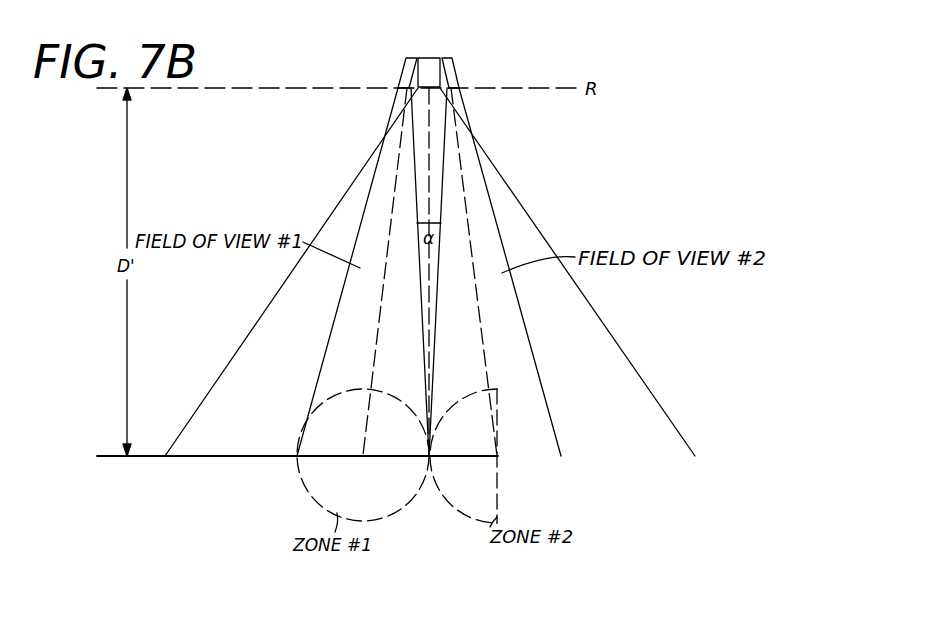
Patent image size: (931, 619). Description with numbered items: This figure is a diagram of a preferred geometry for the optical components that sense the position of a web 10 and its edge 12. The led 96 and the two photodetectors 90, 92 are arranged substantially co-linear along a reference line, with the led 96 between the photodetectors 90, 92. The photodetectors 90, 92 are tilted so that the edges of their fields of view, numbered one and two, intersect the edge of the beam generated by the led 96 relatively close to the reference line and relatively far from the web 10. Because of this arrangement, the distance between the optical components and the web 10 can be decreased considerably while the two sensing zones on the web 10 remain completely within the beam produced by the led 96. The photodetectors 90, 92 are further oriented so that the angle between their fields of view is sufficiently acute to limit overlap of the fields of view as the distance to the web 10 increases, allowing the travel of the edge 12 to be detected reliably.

The web 10 is at (247, 457).
The edge 12 is at (510, 463).
The photodetector 90 is at (407, 60).
The photodetector 92 is at (453, 72).
The led 96 is at (431, 63).